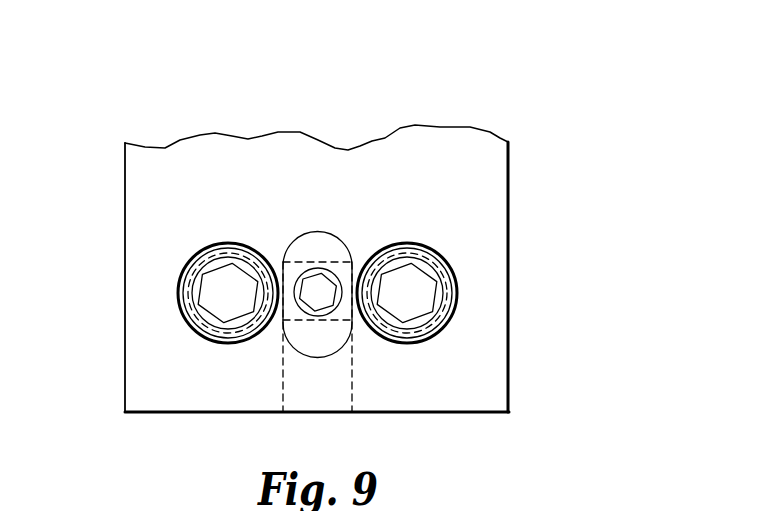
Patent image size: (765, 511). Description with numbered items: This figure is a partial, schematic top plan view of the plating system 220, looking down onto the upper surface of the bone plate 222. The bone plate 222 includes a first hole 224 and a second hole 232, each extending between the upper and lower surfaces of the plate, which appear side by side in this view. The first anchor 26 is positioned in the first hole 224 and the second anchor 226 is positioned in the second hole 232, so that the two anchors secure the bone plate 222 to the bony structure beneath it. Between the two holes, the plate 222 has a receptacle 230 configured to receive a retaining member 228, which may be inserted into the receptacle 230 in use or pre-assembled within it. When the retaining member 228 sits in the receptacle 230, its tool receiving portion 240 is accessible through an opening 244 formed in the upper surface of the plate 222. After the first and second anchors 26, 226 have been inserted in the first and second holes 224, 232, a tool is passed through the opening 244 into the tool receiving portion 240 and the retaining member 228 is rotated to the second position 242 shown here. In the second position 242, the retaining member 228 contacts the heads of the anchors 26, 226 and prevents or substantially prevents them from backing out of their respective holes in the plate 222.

The plating system 220 is at (146, 108).
The bone plate 222 is at (510, 185).
The first hole 224 is at (190, 260).
The first anchor 26 is at (228, 257).
The second position 242 is at (268, 338).
The second anchor 226 is at (428, 252).
The second hole 232 is at (442, 330).
The retaining member 228 is at (300, 238).
The receptacle 230 is at (353, 375).
The tool receiving portion 240 is at (311, 272).
The opening 244 is at (338, 270).